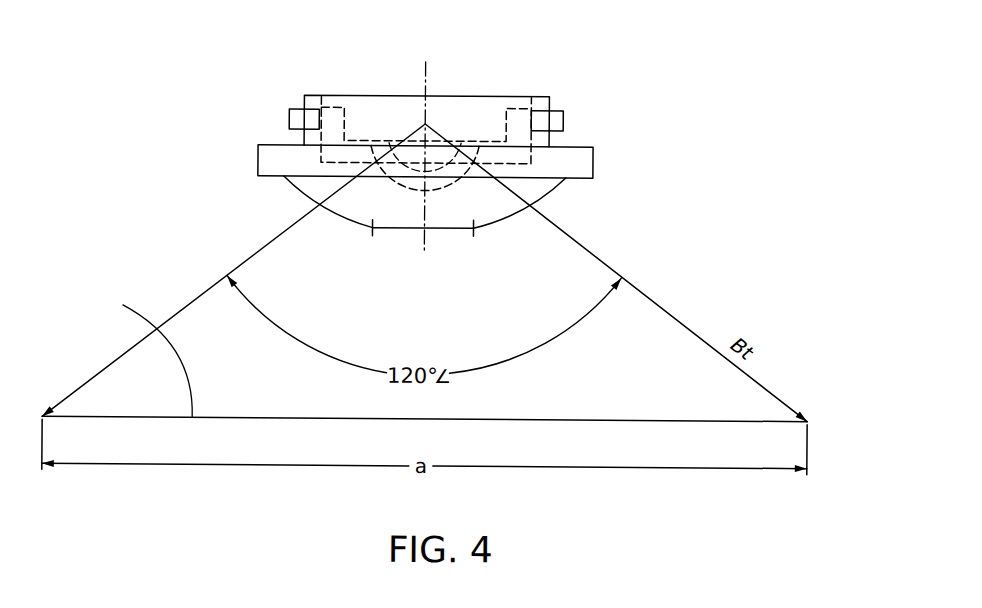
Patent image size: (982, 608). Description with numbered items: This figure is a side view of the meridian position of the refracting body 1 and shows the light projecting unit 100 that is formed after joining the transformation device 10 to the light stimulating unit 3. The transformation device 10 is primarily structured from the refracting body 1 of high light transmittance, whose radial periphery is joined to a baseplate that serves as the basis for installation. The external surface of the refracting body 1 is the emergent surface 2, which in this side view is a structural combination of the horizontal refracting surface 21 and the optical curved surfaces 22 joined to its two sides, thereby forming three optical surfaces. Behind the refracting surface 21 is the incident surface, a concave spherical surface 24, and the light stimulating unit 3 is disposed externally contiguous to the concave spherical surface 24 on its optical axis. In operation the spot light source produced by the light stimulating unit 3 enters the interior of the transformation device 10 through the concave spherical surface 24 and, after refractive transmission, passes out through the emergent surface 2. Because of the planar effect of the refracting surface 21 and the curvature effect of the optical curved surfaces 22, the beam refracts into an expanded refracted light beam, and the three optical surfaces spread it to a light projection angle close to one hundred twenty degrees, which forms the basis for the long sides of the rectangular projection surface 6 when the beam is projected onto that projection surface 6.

The refracting body 1 is at (243, 108).
The light projecting unit 100 is at (588, 110).
The transformation device 10 is at (630, 147).
The light stimulating unit 3 is at (398, 120).
The emergent surface 2 is at (517, 230).
The optical curved surfaces 22 is at (293, 192).
The horizontal refracting surface 21 is at (408, 228).
The concave spherical surface 24 is at (440, 192).
The projection surface 6 is at (150, 355).